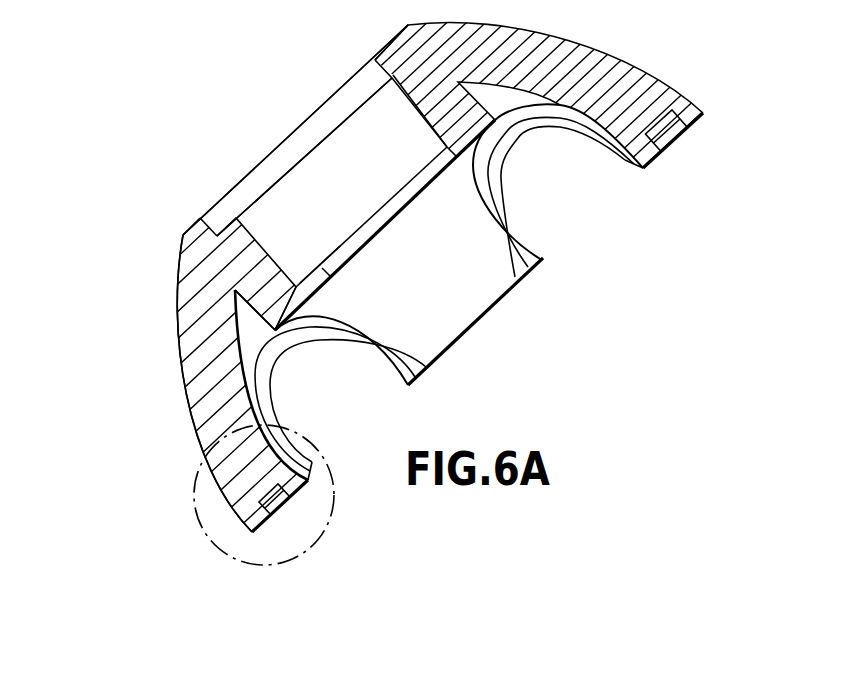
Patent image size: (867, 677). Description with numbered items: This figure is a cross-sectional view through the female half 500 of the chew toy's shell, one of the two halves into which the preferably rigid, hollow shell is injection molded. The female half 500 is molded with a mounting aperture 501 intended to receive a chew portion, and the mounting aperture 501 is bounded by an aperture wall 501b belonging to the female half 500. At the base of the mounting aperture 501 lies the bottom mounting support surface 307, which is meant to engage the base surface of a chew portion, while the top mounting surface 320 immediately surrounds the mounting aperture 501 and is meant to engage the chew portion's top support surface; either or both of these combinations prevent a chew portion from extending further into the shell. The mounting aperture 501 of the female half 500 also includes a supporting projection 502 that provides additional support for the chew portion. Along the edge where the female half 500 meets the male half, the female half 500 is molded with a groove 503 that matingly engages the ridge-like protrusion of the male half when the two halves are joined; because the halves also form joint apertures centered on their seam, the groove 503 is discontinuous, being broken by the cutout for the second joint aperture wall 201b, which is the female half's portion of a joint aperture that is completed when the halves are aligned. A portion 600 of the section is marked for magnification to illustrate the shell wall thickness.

The female half 500 is at (176, 90).
The mounting aperture 501 is at (341, 174).
The aperture wall 501b is at (400, 67).
The top mounting surface 320 is at (222, 240).
The bottom mounting support surface 307 is at (313, 276).
The second joint aperture wall 201b is at (548, 206).
The supporting projection 502 is at (183, 392).
The groove 503 is at (262, 498).
The portion 600 is at (320, 545).